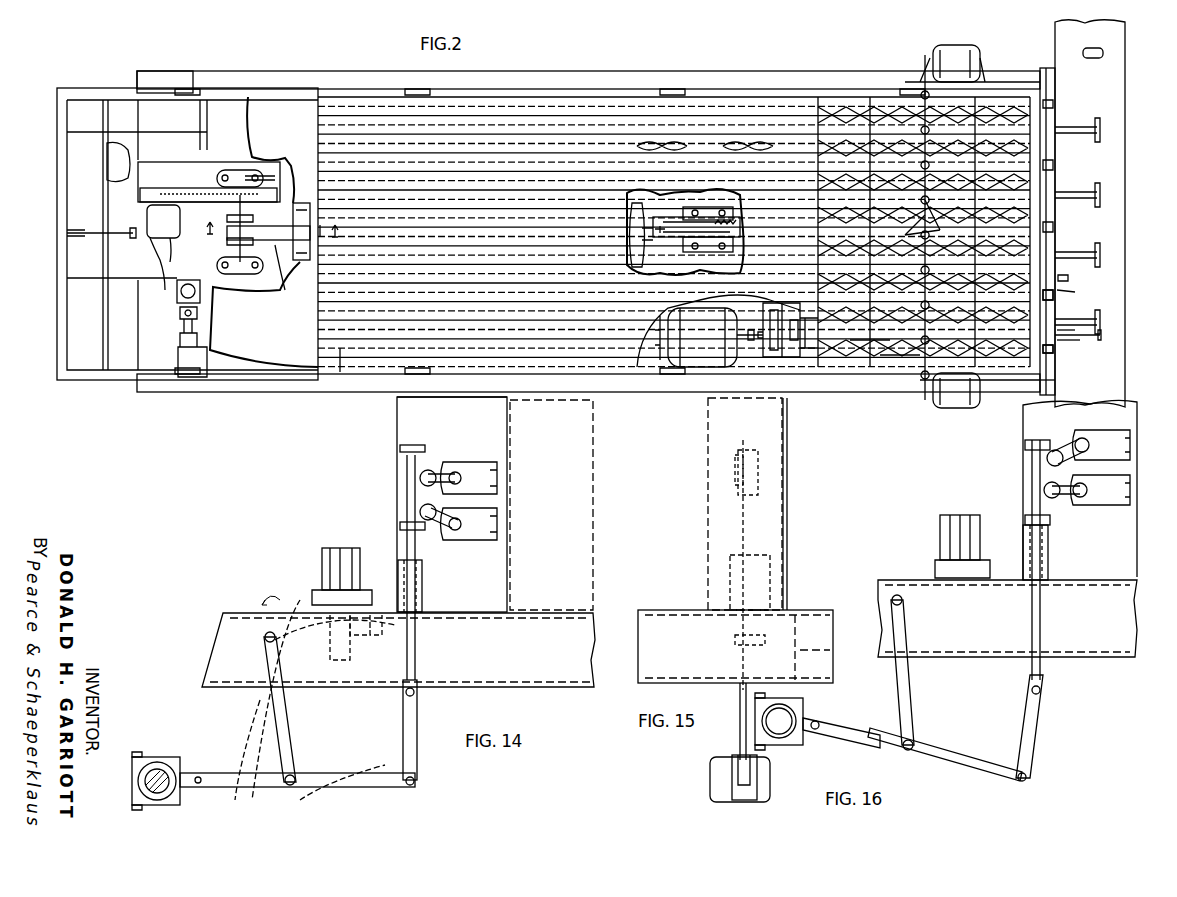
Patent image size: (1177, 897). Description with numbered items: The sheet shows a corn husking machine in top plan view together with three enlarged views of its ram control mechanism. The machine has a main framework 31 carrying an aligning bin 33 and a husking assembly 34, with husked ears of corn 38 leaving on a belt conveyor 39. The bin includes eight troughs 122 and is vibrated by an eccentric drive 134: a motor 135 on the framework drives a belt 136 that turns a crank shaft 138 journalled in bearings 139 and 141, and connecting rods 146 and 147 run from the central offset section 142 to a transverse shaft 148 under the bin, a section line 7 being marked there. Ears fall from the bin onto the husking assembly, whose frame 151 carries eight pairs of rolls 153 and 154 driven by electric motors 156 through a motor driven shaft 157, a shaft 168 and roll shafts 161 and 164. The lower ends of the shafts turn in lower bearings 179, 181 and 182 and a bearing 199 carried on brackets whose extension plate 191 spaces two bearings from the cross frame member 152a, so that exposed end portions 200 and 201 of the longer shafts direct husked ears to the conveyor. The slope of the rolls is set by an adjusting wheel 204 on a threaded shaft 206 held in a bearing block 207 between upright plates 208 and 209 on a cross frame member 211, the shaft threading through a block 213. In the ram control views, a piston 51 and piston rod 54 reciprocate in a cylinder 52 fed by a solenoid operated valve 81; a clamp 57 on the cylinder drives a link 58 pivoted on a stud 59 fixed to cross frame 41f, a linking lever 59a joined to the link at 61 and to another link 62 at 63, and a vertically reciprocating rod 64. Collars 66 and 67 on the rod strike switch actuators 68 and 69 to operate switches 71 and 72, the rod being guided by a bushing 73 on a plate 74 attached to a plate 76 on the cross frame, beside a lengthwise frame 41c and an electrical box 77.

In FIG. 2, the main framework 31 is at (255, 72).
In FIG. 2, the aligning bin 33 is at (728, 95).
In FIG. 2, the husking assembly 34 is at (880, 95).
In FIG. 2, the husked ears of corn 38 is at (1103, 55).
In FIG. 2, the belt conveyor 39 is at (1105, 98).
In FIG. 2, the extension plate 191 is at (1090, 183).
In FIG. 2, the roll shaft 164 is at (1065, 275).
In FIG. 2, the exposed end portion of shaft 201 is at (1070, 282).
In FIG. 2, the roll shaft 161 is at (1062, 295).
In FIG. 2, the lower bearing 181 is at (1100, 317).
In FIG. 2, the lower bearing 182 is at (1100, 334).
In FIG. 2, the exposed end portion of shaft 200 is at (1080, 340).
In FIG. 2, the shaft 168 is at (1075, 330).
In FIG. 2, the bearing 199 is at (1053, 350).
In FIG. 2, the cross frame member 152a is at (1050, 378).
In FIG. 2, the lower bearing 179 is at (1055, 292).
In FIG. 2, the eccentric drive 134 is at (195, 183).
In FIG. 2, the motor 135 is at (150, 220).
In FIG. 2, the bearing 141 is at (240, 172).
In FIG. 2, the belt 136 is at (210, 190).
In FIG. 2, the connecting rod 146 is at (300, 203).
In FIG. 2, the crank shaft 138 is at (228, 213).
In FIG. 2, the section line 7 is at (202, 230).
In FIG. 2, the central offset section 142 is at (250, 232).
In FIG. 2, the transverse shaft 148 is at (322, 238).
In FIG. 2, the bearing 139 is at (243, 270).
In FIG. 2, the connecting rod 147 is at (273, 250).
In FIG. 2, the adjusting wheel 204 is at (628, 235).
In FIG. 2, the upright plate 209 is at (672, 215).
In FIG. 2, the cross frame member 211 is at (700, 240).
In FIG. 2, the block 213 is at (730, 208).
In FIG. 2, the upright plate 208 is at (690, 252).
In FIG. 2, the threaded shaft 206 is at (738, 222).
In FIG. 2, the bearing block 207 is at (650, 240).
In FIG. 2, the electric motor 156 is at (727, 310).
In FIG. 2, the motor driven shaft 157 is at (770, 347).
In FIG. 2, the frame 151 is at (815, 360).
In FIG. 2, the roll 153 is at (860, 345).
In FIG. 2, the roll 154 is at (882, 350).
In FIG. 2, the trough 122 is at (340, 348).
In FIG. 2, the plate 76 is at (397, 405).
In FIG. 14, the plate 76 is at (397, 405).
In FIG. 15, the plate 76 is at (788, 422).
In FIG. 16, the plate 76 is at (1028, 425).
In FIG. 14, the box 77 is at (580, 462).
In FIG. 15, the box 77 is at (718, 420).
In FIG. 14, the cross frame 41f is at (225, 655).
In FIG. 15, the cross frame 41f is at (830, 648).
In FIG. 16, the cross frame 41f is at (1075, 657).
In FIG. 15, the lengthwise frame 41c is at (650, 625).
In FIG. 14, the solenoid operated valve 81 is at (322, 580).
In FIG. 16, the solenoid operated valve 81 is at (962, 546).
In FIG. 14, the vertically reciprocating rod 64 is at (415, 635).
In FIG. 15, the vertically reciprocating rod 64 is at (765, 548).
In FIG. 16, the vertically reciprocating rod 64 is at (1040, 618).
In FIG. 14, the collar 66 is at (400, 448).
In FIG. 16, the collar 66 is at (1040, 442).
In FIG. 14, the collar 67 is at (400, 526).
In FIG. 16, the collar 67 is at (1030, 517).
In FIG. 14, the switch actuator 68 is at (430, 470).
In FIG. 16, the switch actuator 68 is at (1060, 452).
In FIG. 14, the switch actuator 69 is at (428, 522).
In FIG. 16, the switch actuator 69 is at (1055, 500).
In FIG. 14, the switch 71 is at (478, 470).
In FIG. 16, the switch 71 is at (1110, 445).
In FIG. 14, the switch 72 is at (470, 540).
In FIG. 16, the switch 72 is at (1108, 508).
In FIG. 14, the bushing 73 is at (422, 588).
In FIG. 16, the bushing 73 is at (1048, 556).
In FIG. 15, the plate 74 is at (770, 566).
In FIG. 14, the link 62 is at (417, 728).
In FIG. 16, the link 62 is at (1033, 730).
In FIG. 14, the pivot connection 63 is at (414, 783).
In FIG. 16, the pivot connection 63 is at (1028, 780).
In FIG. 14, the stud 59 is at (265, 640).
In FIG. 15, the stud 59 is at (765, 630).
In FIG. 16, the stud 59 is at (905, 602).
In FIG. 14, the linking lever 59a is at (348, 778).
In FIG. 16, the linking lever 59a is at (935, 750).
In FIG. 14, the link 58 is at (290, 728).
In FIG. 16, the link 58 is at (910, 683).
In FIG. 14, the pivot connection 61 is at (288, 786).
In FIG. 16, the pivot connection 61 is at (906, 750).
In FIG. 14, the clamp 57 is at (182, 773).
In FIG. 15, the clamp 57 is at (808, 742).
In FIG. 14, the cylinder 52 is at (135, 770).
In FIG. 15, the cylinder 52 is at (790, 742).
In FIG. 14, the piston rod 54 is at (157, 775).
In FIG. 15, the piston 51 is at (805, 720).